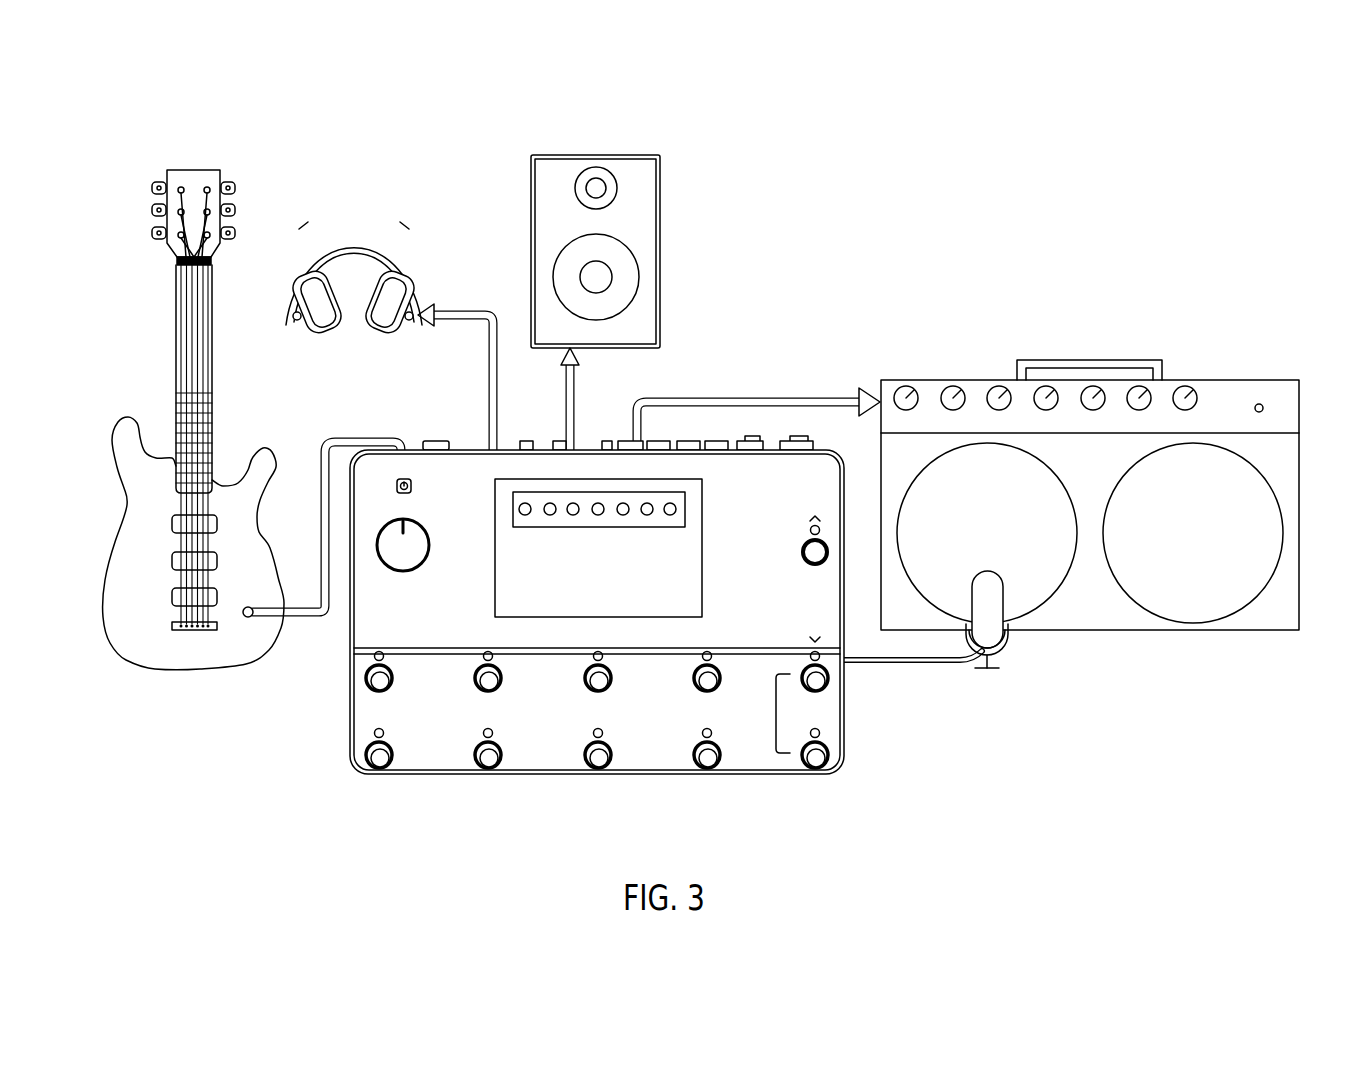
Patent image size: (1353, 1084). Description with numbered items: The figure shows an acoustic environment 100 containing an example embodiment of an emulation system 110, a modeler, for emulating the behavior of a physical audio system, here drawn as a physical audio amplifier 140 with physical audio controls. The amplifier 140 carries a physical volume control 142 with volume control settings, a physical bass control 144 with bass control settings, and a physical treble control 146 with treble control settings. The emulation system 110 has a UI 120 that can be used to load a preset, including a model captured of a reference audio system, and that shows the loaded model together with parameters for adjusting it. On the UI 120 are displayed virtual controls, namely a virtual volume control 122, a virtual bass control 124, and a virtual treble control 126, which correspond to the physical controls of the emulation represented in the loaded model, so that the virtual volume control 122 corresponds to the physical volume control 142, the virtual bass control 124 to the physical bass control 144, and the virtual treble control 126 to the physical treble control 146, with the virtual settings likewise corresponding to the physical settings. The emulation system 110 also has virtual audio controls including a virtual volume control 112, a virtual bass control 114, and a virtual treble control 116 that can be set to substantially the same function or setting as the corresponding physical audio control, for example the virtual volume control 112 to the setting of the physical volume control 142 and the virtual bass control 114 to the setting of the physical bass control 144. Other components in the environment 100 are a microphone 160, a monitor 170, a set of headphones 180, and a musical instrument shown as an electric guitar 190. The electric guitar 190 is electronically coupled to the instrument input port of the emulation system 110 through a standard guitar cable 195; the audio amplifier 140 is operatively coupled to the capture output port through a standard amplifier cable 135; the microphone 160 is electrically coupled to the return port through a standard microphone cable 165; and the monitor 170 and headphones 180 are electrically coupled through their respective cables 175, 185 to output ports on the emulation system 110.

The environment 100 is at (832, 164).
The emulation system 110 is at (350, 723).
The virtual volume control 112 is at (416, 521).
The virtual bass control 114 is at (390, 686).
The virtual treble control 116 is at (499, 686).
The UI 120 is at (635, 552).
The virtual volume control 122 is at (527, 515).
The virtual bass control 124 is at (575, 515).
The virtual treble control 126 is at (624, 515).
The amplifier cable 135 is at (740, 397).
The physical audio amplifier 140 is at (1090, 459).
The physical volume control 142 is at (902, 390).
The physical bass control 144 is at (1088, 390).
The physical treble control 146 is at (995, 390).
The microphone 160 is at (1004, 648).
The microphone cable 165 is at (888, 664).
The monitor 170 is at (596, 157).
The monitor cable 175 is at (576, 410).
The headphones 180 is at (355, 200).
The headphone cable 185 is at (450, 308).
The electric guitar 190 is at (193, 170).
The guitar cable 195 is at (352, 434).